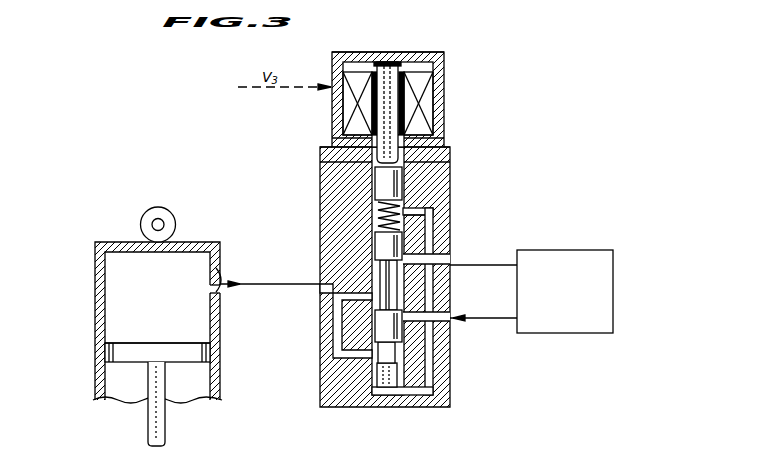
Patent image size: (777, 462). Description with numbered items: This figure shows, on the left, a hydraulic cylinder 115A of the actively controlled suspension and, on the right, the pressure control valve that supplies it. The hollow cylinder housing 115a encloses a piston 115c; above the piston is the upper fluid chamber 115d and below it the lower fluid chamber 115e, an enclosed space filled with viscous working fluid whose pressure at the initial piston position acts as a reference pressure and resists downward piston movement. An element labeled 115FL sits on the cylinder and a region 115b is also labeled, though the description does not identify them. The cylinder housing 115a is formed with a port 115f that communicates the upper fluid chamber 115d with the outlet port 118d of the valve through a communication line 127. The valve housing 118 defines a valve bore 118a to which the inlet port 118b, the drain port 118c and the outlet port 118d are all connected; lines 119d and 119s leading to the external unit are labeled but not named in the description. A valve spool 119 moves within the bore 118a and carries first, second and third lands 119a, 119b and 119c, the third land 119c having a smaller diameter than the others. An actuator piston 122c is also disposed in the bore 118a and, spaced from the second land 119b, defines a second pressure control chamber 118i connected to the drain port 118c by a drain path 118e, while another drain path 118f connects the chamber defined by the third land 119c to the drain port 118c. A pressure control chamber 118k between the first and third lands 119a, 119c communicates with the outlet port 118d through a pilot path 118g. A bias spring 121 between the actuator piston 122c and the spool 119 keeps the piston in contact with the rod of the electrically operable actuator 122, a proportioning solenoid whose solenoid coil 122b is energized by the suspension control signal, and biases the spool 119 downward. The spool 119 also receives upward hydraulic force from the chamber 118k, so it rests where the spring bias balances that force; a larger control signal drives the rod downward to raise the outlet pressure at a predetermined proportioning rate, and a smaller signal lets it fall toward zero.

The valve housing 118 is at (322, 408).
The valve bore 118a is at (373, 182).
The inlet port 118b is at (437, 323).
The drain port 118c is at (447, 242).
The outlet port 118d is at (332, 270).
The drain path 118e is at (430, 212).
The drain path 118f is at (417, 408).
The pilot path 118g is at (345, 372).
The second pressure control chamber 118i is at (449, 178).
The pressure control chamber 118k is at (383, 410).
The valve spool 119 is at (378, 345).
The first land 119a is at (377, 320).
The second land 119b is at (375, 242).
The third land 119c is at (356, 407).
The outlet port 119d is at (460, 272).
The supply port 119s is at (479, 316).
The bias spring 121 is at (378, 217).
The electrically operable actuator 122 is at (445, 80).
The solenoid coil 122b is at (420, 52).
The actuator piston 122c is at (320, 155).
The communication line 127 is at (243, 291).
The wheel (front left / rear right) 115FL is at (184, 238).
The hollow cylinder housing 115a is at (98, 312).
The cylinder bore 115b is at (112, 275).
The hydraulic cylinder 115A is at (107, 350).
The piston 115c is at (210, 353).
The upper fluid chamber 115d is at (165, 420).
The lower fluid chamber 115e is at (108, 392).
The port 115f is at (224, 274).